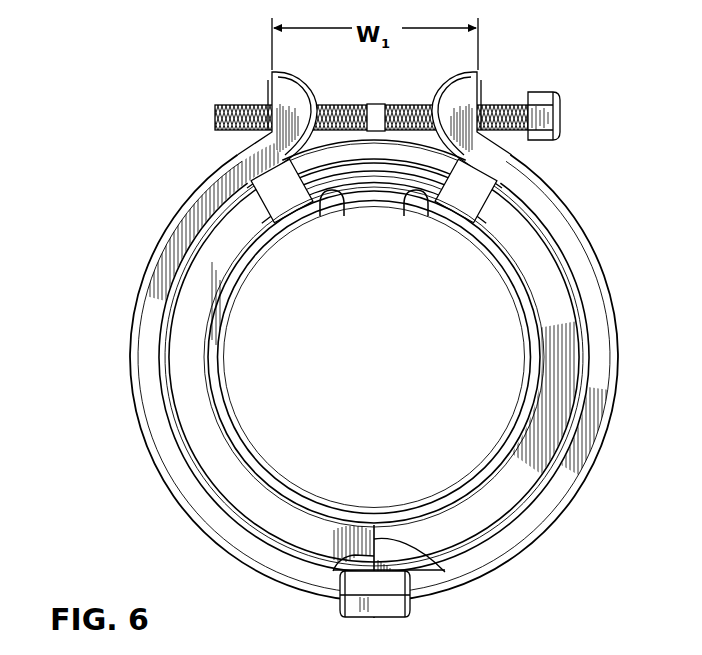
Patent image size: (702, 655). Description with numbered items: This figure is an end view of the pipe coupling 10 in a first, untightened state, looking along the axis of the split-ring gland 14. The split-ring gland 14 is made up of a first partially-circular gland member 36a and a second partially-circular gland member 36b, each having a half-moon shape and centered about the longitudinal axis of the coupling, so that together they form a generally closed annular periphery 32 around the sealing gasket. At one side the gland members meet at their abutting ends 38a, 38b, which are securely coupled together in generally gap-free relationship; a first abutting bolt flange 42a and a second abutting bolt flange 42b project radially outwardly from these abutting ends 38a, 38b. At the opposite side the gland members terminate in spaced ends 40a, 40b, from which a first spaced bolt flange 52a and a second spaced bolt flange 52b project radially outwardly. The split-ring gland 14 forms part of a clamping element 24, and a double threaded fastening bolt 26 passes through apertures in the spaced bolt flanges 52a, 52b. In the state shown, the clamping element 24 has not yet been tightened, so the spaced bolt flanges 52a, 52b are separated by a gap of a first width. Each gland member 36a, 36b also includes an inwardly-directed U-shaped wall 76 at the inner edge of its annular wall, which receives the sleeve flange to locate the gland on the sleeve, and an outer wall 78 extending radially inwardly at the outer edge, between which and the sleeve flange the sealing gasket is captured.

The pipe coupling 10 is at (343, 393).
The split-ring gland 14 is at (343, 370).
The clamping element 24 is at (255, 77).
The double threaded fastening bolt 26 is at (212, 118).
The closed annular periphery 32 is at (541, 523).
The first partially-circular gland member 36a is at (613, 302).
The second partially-circular gland member 36b is at (134, 305).
The abutting end 38a is at (335, 564).
The abutting end 38b is at (404, 542).
The spaced end 40a is at (420, 200).
The spaced end 40b is at (328, 200).
The first abutting bolt flange 42a is at (393, 618).
The second abutting bolt flange 42b is at (355, 618).
The first spaced bolt flange 52a is at (482, 71).
The second spaced bolt flange 52b is at (313, 80).
The U-shaped wall 76 is at (611, 390).
The outer wall 78 is at (567, 345).